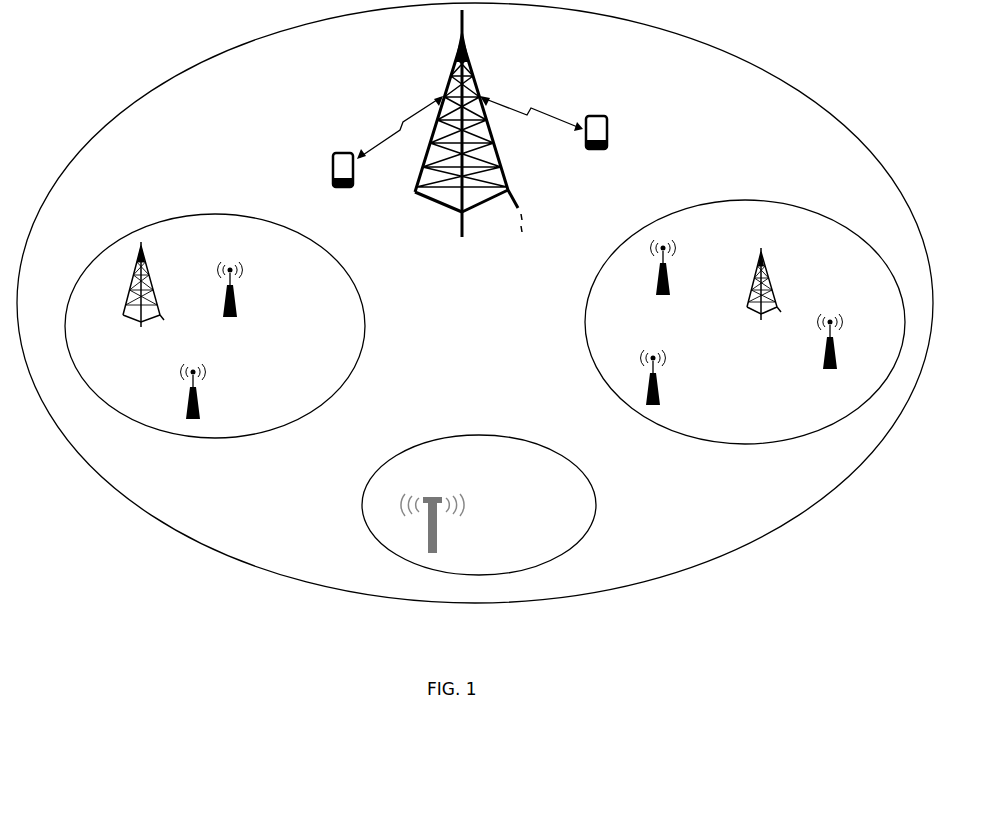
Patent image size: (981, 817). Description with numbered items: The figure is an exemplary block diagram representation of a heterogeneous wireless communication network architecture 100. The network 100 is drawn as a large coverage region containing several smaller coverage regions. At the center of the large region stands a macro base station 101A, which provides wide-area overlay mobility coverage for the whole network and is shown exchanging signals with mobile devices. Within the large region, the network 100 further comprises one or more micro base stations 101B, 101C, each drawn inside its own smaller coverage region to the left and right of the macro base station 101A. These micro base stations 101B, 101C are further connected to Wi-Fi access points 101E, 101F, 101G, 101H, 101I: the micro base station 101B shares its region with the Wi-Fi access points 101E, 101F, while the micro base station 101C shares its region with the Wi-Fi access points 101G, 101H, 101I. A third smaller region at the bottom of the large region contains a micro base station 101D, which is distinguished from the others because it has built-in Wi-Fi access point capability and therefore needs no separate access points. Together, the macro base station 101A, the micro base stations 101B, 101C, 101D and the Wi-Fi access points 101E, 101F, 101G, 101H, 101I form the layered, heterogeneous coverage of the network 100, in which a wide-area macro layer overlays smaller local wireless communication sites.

The heterogeneous communication network architecture 100 is at (789, 79).
The macro base station 101A is at (470, 62).
The micro base station 101B is at (148, 276).
The micro base station 101C is at (768, 278).
The micro base station with built-in Wi-Fi access point capability 101D is at (437, 543).
The Wi-Fi access point 101E is at (237, 301).
The Wi-Fi access point 101F is at (202, 401).
The Wi-Fi access point 101G is at (670, 274).
The Wi-Fi access point 101H is at (660, 383).
The Wi-Fi access point 101I is at (837, 346).